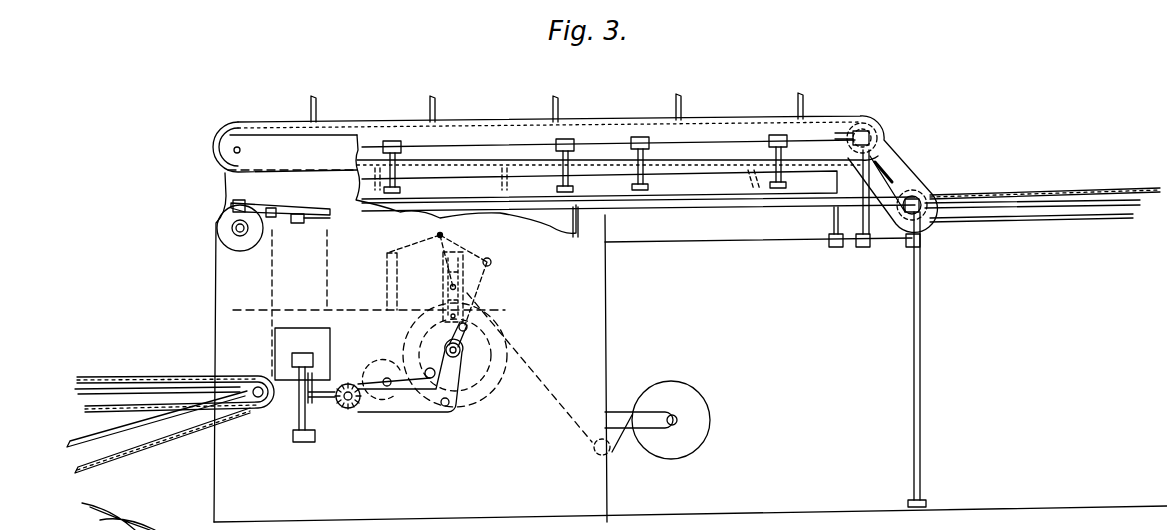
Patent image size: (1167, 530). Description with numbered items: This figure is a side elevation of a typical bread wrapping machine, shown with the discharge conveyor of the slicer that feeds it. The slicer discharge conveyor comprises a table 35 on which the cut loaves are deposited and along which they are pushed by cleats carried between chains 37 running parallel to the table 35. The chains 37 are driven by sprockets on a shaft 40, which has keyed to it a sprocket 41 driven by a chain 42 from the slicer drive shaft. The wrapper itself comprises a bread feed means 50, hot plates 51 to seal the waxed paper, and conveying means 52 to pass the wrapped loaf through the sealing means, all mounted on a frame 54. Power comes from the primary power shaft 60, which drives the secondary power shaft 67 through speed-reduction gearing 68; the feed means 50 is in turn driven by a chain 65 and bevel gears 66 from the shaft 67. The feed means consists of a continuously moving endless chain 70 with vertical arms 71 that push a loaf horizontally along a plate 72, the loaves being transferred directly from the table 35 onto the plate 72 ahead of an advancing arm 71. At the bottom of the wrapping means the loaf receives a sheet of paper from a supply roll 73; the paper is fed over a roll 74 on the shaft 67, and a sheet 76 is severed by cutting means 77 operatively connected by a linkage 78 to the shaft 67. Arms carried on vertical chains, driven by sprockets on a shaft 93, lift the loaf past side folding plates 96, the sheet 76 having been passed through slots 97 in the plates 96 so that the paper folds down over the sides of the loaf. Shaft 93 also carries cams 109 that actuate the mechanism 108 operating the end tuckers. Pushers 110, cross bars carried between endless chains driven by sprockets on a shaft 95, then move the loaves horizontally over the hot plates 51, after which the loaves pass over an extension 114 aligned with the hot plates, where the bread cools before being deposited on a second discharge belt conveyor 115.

The table 35 is at (95, 394).
The chains 37 is at (130, 376).
The shaft 40 is at (251, 413).
The sprocket 41 is at (264, 405).
The chain 42 is at (124, 456).
The bread feed means 50 is at (320, 415).
The hot plates 51 is at (402, 184).
The conveying means 52 is at (733, 114).
The frame 54 is at (617, 344).
The shaft 60 is at (388, 388).
The chain 65 is at (429, 413).
The bevel gears 66 is at (356, 409).
The secondary power shaft 67 is at (462, 351).
The speed-reduction gearing 68 is at (386, 340).
The endless chain 70 is at (299, 412).
The vertical arms 71 is at (306, 443).
The plate 72 is at (280, 362).
The supply roll 73 is at (698, 410).
The roll 74 is at (505, 318).
The sheet 76 is at (242, 306).
The cutting means 77 is at (383, 300).
The linkage 78 is at (505, 258).
The shaft 93 is at (238, 231).
The shaft 95 is at (440, 303).
The side folding plates 96 is at (327, 267).
The slots 97 is at (327, 309).
The mechanism 108 is at (264, 204).
The cams 109 is at (225, 239).
The pushers 110 is at (422, 107).
The extension 114 is at (673, 200).
The second discharge belt conveyor 115 is at (983, 192).